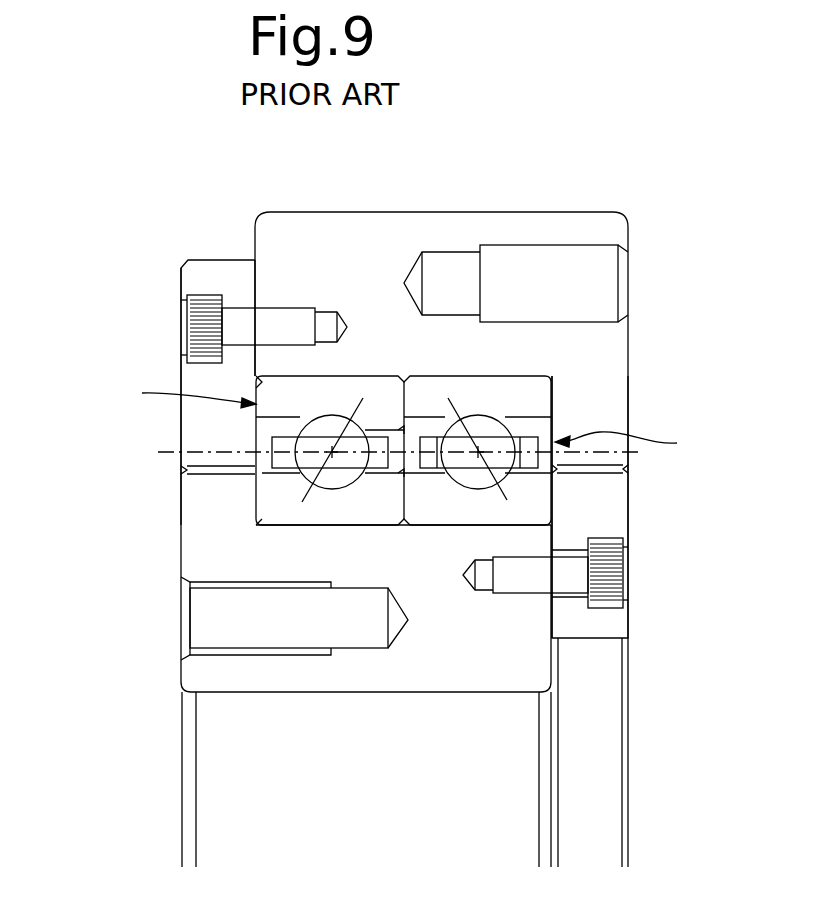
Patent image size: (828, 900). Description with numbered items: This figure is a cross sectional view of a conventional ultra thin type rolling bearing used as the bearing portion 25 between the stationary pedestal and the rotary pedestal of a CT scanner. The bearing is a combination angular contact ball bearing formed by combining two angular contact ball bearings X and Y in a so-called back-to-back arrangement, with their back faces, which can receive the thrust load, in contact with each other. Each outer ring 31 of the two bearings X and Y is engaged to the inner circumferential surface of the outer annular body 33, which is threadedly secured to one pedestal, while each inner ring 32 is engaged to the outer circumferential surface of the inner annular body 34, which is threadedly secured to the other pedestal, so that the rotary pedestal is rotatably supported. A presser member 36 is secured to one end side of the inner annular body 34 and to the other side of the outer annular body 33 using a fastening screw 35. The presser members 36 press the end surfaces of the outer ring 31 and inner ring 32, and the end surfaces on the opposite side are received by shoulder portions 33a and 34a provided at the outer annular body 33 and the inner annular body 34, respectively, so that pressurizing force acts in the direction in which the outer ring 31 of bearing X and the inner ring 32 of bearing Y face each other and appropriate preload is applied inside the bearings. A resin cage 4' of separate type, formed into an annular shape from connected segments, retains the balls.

The bearing portion 25 is at (150, 248).
The outer ring 31 is at (378, 390).
The inner ring 32 is at (345, 510).
The outer annular body 33 is at (580, 223).
The shoulder portion 33a is at (567, 397).
The inner annular body 34 is at (242, 680).
The shoulder portion 34a is at (243, 497).
The fastening screw 35 is at (295, 323).
The presser member 36 is at (223, 267).
The cage 4' is at (394, 389).
The angular contact ball bearing X is at (188, 391).
The angular contact ball bearing Y is at (628, 438).